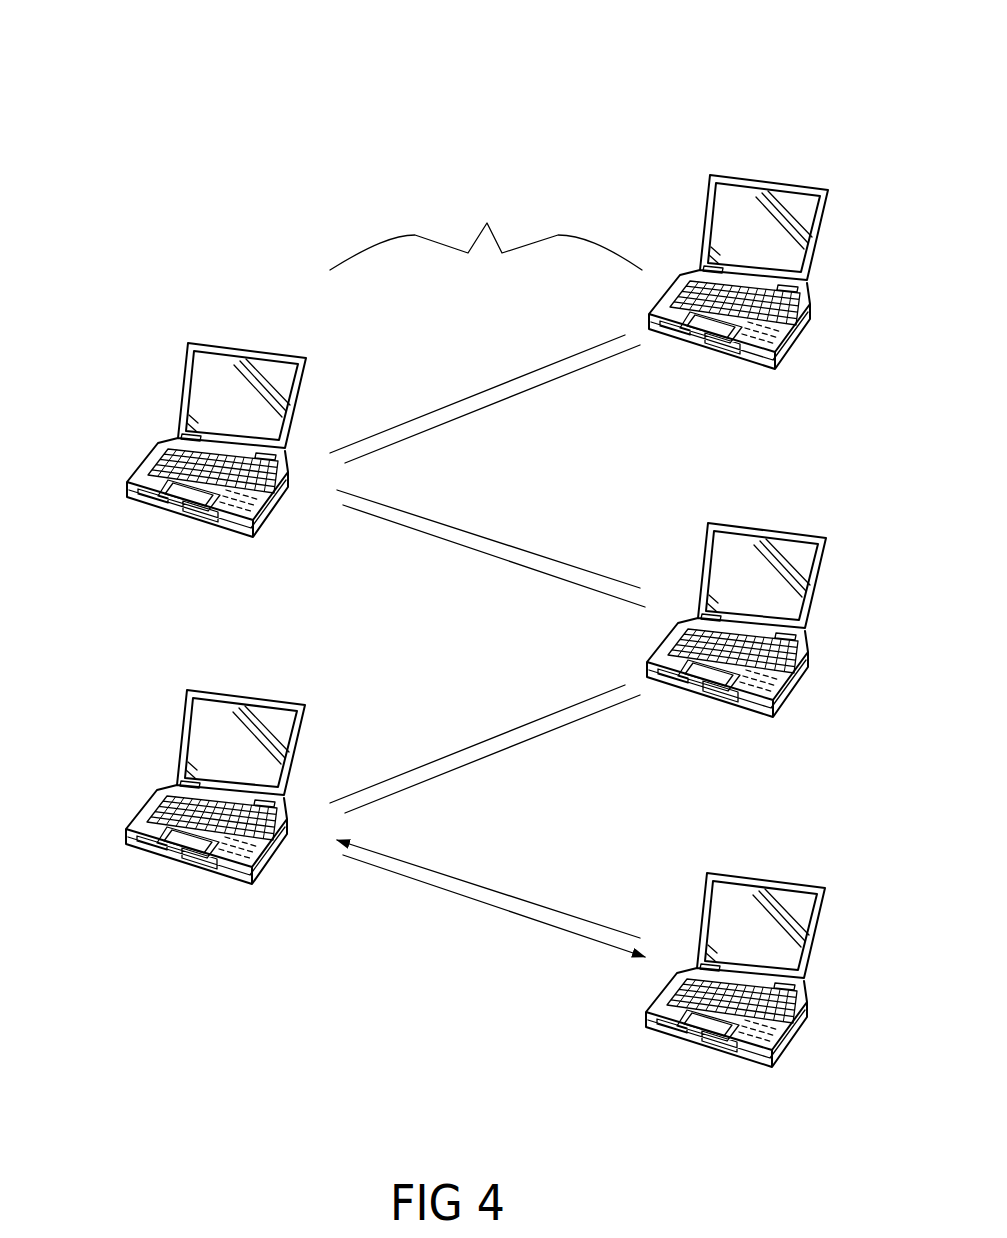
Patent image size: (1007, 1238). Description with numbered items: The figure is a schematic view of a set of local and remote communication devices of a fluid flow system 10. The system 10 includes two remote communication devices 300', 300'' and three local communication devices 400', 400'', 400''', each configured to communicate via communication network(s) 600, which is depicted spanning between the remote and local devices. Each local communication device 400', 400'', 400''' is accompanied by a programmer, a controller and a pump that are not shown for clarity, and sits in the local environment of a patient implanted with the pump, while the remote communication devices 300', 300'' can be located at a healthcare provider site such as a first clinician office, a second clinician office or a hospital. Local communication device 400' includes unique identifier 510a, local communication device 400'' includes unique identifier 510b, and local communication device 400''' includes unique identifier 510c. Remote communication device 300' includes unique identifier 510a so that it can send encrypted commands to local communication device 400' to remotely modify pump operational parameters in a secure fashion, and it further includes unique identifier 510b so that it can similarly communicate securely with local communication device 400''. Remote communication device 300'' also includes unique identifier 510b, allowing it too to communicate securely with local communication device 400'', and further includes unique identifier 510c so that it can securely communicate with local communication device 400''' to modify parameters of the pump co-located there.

The system 10 is at (133, 132).
The remote communication device 300' is at (163, 438).
The remote communication device 300'' is at (162, 785).
The local communication device 400' is at (772, 213).
The local communication device 400'' is at (773, 561).
The local communication device 400''' is at (773, 911).
The unique identifier 510a is at (827, 362).
The unique identifier 510b is at (825, 710).
The unique identifier 510c is at (824, 1060).
The communication network 600 is at (505, 206).